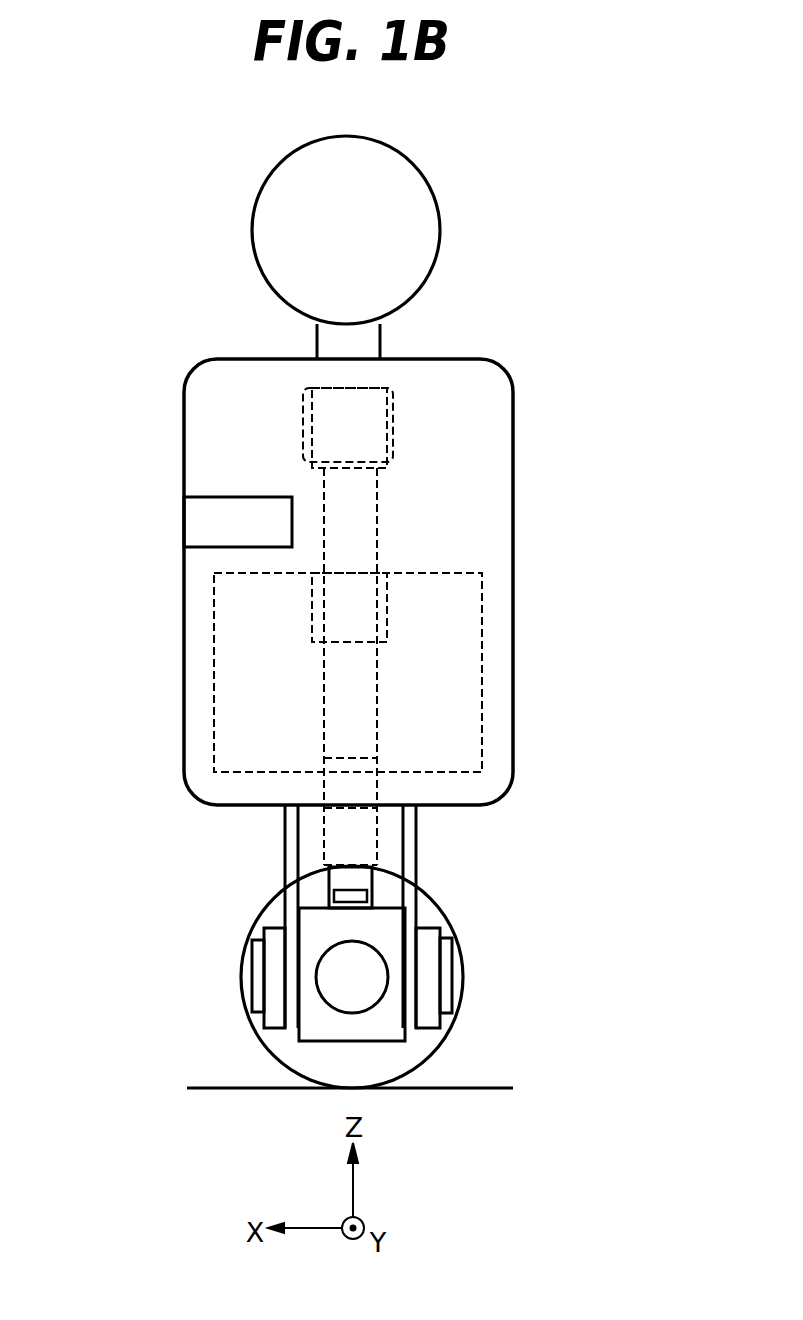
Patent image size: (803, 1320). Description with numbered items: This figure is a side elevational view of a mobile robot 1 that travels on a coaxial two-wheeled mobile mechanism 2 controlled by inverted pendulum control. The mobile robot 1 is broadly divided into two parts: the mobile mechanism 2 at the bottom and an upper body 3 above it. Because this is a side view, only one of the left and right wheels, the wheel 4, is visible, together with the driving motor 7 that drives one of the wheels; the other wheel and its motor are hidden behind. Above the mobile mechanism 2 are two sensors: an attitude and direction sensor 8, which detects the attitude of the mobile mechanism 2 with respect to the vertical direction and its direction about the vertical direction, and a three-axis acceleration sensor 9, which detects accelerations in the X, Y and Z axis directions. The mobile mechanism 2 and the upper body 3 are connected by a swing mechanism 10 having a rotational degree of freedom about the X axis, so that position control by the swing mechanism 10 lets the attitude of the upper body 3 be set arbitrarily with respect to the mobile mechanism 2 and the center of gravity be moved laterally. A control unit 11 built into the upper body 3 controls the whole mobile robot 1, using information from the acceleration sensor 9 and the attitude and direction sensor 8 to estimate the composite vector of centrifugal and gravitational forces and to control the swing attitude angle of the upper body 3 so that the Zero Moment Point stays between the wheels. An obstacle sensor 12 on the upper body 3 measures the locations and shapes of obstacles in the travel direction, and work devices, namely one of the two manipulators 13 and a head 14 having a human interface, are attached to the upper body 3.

The mobile robot 1 is at (342, 593).
The mobile mechanism 2 is at (375, 1030).
The upper body 3 is at (443, 365).
The wheel 4 is at (432, 913).
The driving motor 7 is at (373, 975).
The attitude and direction sensor 8 is at (300, 888).
The acceleration sensor 9 is at (355, 890).
The swing mechanism 10 is at (252, 968).
The control unit 11 is at (230, 673).
The obstacle sensor 12 is at (197, 521).
The manipulator 13 is at (375, 432).
The head 14 is at (273, 170).